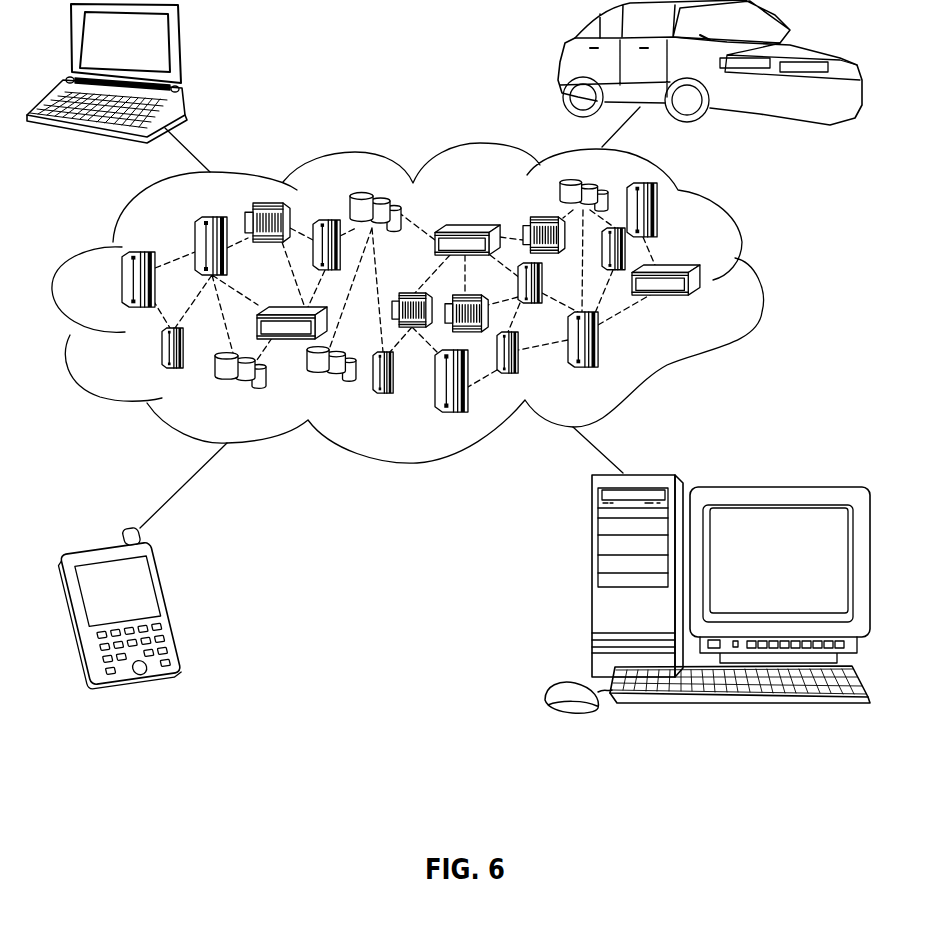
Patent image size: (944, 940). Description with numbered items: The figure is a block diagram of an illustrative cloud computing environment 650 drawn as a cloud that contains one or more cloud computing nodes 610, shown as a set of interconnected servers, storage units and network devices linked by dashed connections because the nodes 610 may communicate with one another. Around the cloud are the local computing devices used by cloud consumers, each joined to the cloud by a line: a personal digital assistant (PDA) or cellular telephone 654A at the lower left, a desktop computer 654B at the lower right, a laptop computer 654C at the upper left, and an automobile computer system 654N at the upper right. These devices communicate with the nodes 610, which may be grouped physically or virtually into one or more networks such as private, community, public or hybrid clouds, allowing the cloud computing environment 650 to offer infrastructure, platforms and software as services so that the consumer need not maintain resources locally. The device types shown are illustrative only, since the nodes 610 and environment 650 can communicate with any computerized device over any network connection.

The cloud computing nodes 610 is at (733, 307).
The cloud computing environment 650 is at (742, 242).
The personal digital assistant (PDA) or cellular telephone 654A is at (173, 602).
The desktop computer 654B is at (592, 583).
The laptop computer 654C is at (180, 50).
The automobile computer system 654N is at (565, 44).